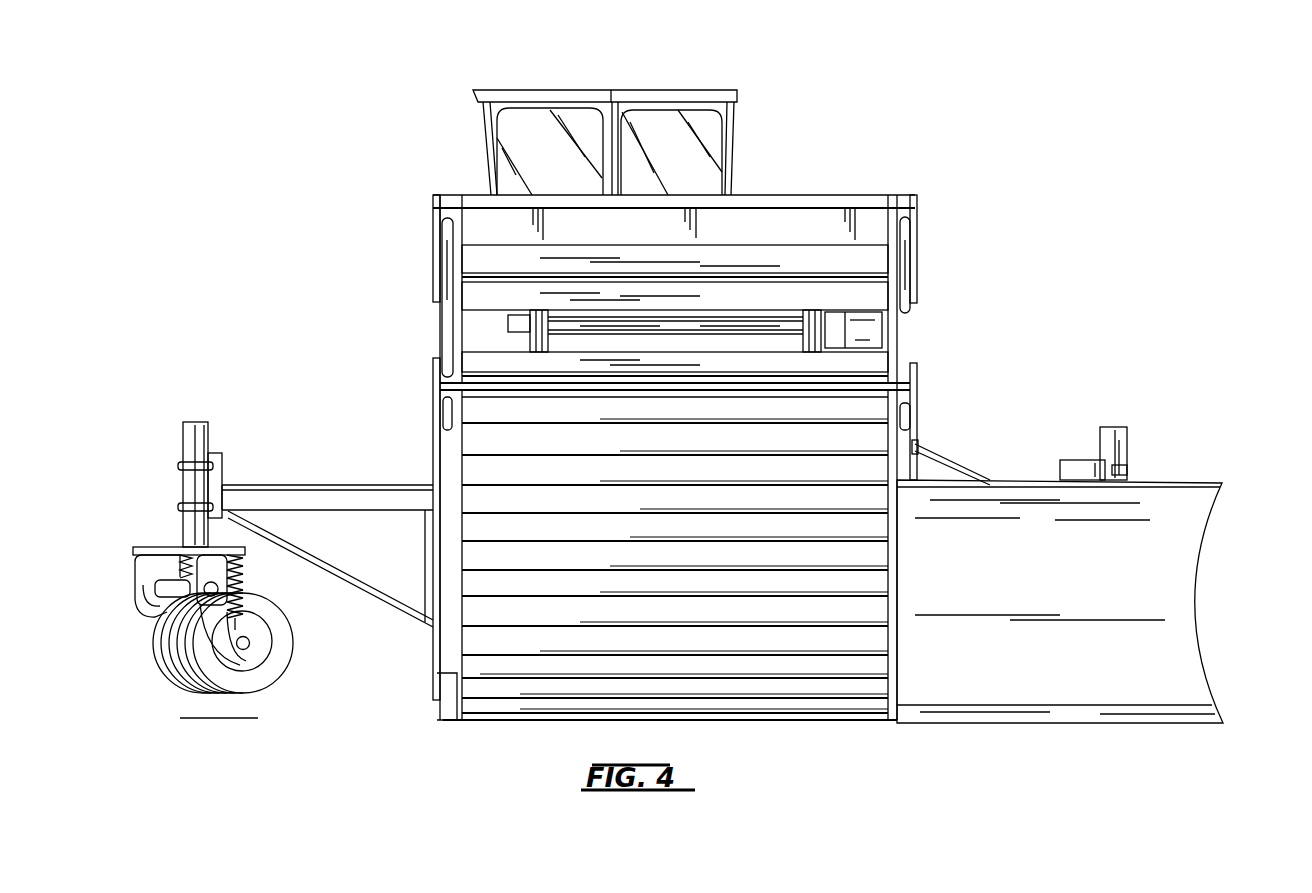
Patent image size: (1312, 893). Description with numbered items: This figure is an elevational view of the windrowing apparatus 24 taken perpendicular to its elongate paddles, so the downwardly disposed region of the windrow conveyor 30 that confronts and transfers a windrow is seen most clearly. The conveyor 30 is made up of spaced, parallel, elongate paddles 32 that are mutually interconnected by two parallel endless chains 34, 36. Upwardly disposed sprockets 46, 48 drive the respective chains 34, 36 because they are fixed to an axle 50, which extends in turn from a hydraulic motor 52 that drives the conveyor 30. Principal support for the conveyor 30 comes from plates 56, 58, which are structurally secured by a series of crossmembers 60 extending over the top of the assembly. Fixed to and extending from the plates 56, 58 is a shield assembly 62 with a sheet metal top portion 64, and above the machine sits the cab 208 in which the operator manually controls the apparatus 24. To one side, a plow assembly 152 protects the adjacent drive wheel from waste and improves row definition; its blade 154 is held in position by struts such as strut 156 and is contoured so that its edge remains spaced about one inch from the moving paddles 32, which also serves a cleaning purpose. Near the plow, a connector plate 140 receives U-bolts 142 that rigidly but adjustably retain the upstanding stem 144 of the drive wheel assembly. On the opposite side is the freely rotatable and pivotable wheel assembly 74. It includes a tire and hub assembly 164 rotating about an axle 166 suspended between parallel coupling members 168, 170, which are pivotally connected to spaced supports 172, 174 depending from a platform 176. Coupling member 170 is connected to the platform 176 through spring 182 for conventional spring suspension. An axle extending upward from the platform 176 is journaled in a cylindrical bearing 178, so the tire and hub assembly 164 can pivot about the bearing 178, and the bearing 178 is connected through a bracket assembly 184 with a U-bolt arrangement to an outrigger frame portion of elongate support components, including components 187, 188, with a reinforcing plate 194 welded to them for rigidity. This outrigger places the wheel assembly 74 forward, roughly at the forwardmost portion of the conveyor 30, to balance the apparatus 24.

The windrowing apparatus 24 is at (818, 140).
The cab 208 is at (483, 130).
The sheet metal top portion 64 is at (875, 222).
The shield assembly 62 is at (920, 212).
The upwardly disposed sprocket 46 is at (544, 306).
The upwardly disposed sprocket 48 is at (801, 308).
The hydraulic motor 52 is at (882, 330).
The endless chain 34 is at (549, 338).
The axle 50 is at (673, 318).
The endless chain 36 is at (802, 340).
The crossmembers 60 is at (442, 392).
The plate 58 is at (442, 416).
The plate 56 is at (918, 392).
The strut 156 is at (948, 460).
The connector plate 140 is at (1082, 468).
The upstanding stem 144 is at (1127, 440).
The U-bolts 142 is at (1128, 470).
The plow assembly 152 is at (1205, 610).
The blade 154 is at (1075, 690).
The windrow conveyor 30 is at (818, 730).
The paddles 32 is at (517, 663).
The cylindrical bearing 178 is at (209, 433).
The bracket assembly 184 is at (180, 466).
The reinforcing plate 194 is at (307, 485).
The elongate support component 188 is at (345, 497).
The platform 176 is at (158, 545).
The support 174 is at (213, 565).
The spring 182 is at (245, 566).
The support 172 is at (138, 565).
The coupling member 170 is at (258, 630).
The coupling member 168 is at (155, 608).
The elongate support component 187 is at (364, 576).
The axle 166 is at (252, 644).
The tire and hub assembly 164 is at (272, 688).
The wheel assembly 74 is at (274, 728).